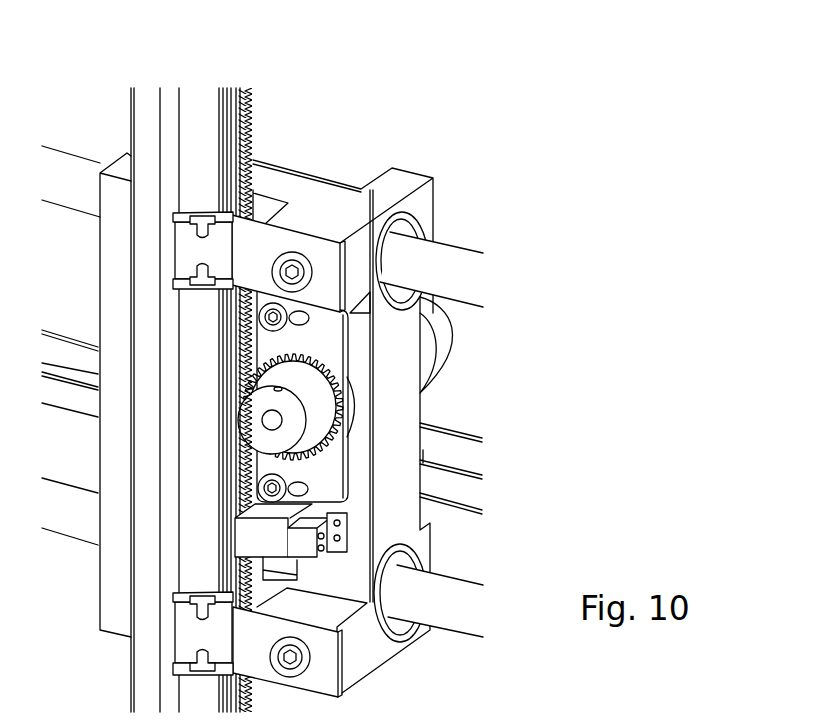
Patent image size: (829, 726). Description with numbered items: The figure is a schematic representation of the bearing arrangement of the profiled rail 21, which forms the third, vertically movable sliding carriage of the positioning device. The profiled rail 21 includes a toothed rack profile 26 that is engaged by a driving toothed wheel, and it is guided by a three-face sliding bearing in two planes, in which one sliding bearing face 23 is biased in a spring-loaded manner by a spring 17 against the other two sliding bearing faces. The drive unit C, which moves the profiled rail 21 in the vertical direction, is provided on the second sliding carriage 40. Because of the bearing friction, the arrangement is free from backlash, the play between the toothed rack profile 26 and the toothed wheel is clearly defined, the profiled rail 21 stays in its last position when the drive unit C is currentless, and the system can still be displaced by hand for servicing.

The profiled rail 21 is at (197, 104).
The sliding bearing face 23 is at (213, 428).
The toothed rack profile 26 is at (255, 143).
The spring 17 is at (263, 252).
The second sliding carriage 40 is at (407, 418).
The drive unit C is at (455, 340).